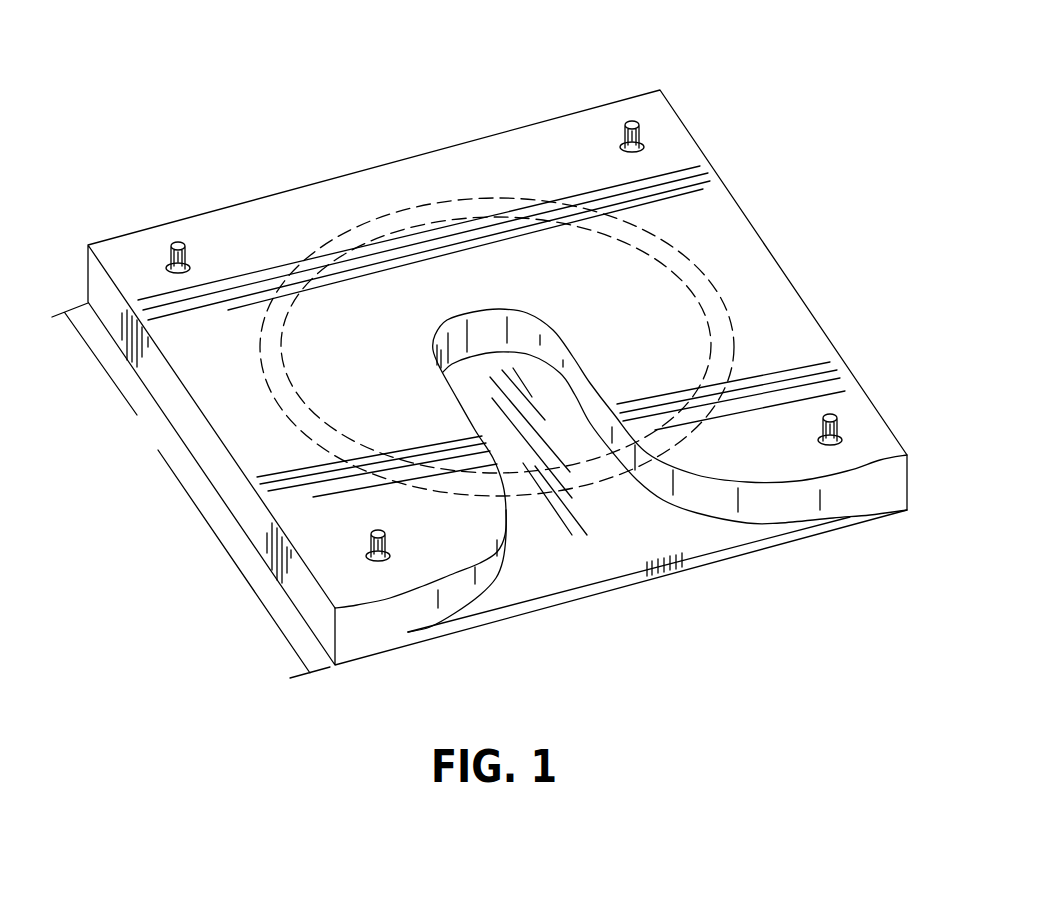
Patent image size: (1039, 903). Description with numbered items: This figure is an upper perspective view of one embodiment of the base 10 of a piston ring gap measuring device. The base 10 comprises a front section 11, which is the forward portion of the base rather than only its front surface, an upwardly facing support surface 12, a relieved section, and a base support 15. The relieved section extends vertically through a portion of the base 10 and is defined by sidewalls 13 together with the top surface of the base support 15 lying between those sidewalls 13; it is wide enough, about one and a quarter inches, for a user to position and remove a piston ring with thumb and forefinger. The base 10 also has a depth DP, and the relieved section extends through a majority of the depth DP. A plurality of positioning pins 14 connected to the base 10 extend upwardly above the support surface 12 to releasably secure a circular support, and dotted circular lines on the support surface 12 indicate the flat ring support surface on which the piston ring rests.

The base 10 is at (783, 267).
The front section 11 is at (830, 503).
The support surface 12 is at (710, 207).
The sidewalls 13 is at (627, 455).
The positioning pins 14 is at (633, 122).
The base support 15 is at (657, 549).
The depth DP is at (191, 490).